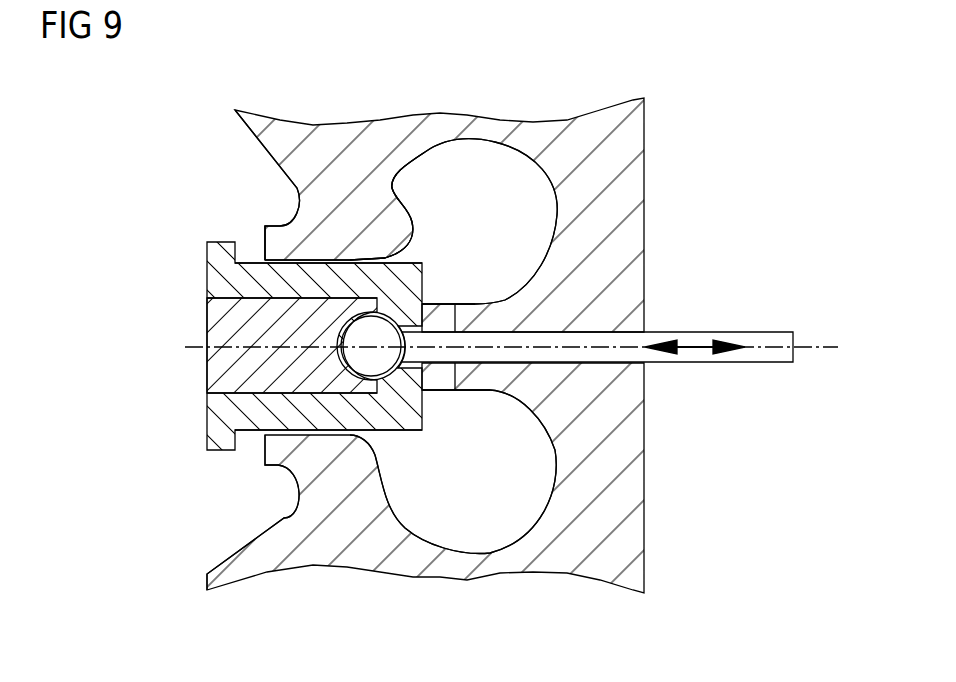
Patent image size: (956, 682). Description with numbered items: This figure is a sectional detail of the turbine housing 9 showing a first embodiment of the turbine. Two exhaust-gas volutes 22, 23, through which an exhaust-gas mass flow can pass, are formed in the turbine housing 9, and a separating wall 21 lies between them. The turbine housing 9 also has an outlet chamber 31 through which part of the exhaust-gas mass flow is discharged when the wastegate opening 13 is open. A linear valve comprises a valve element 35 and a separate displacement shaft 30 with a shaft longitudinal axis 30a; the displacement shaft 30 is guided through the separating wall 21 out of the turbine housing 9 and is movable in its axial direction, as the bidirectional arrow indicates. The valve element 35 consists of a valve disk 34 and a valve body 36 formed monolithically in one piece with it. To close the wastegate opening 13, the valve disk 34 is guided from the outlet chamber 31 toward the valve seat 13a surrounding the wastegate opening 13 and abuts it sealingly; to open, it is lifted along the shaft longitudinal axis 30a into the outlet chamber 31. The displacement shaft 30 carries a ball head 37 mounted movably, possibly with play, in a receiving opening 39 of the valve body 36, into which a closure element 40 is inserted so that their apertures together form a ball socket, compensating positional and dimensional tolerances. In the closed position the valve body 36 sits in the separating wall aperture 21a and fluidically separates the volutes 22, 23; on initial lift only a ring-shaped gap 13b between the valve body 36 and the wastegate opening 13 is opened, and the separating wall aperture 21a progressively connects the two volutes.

The turbine housing 9 is at (628, 429).
The wastegate opening 13 is at (366, 254).
The valve seat 13a is at (256, 246).
The ring-shaped gap 13b is at (308, 260).
The separating wall 21 is at (483, 312).
The separating wall aperture 21a is at (430, 380).
The exhaust-gas volute 22 is at (528, 203).
The exhaust-gas volute 23 is at (514, 508).
The displacement shaft 30 is at (771, 342).
The shaft longitudinal axis 30a is at (836, 352).
The outlet chamber 31 is at (277, 208).
The valve disk 34 is at (222, 254).
The valve element 35 is at (178, 319).
The valve body 36 is at (307, 408).
The ball head 37 is at (368, 330).
The receiving opening 39 is at (385, 380).
The closure element 40 is at (232, 370).